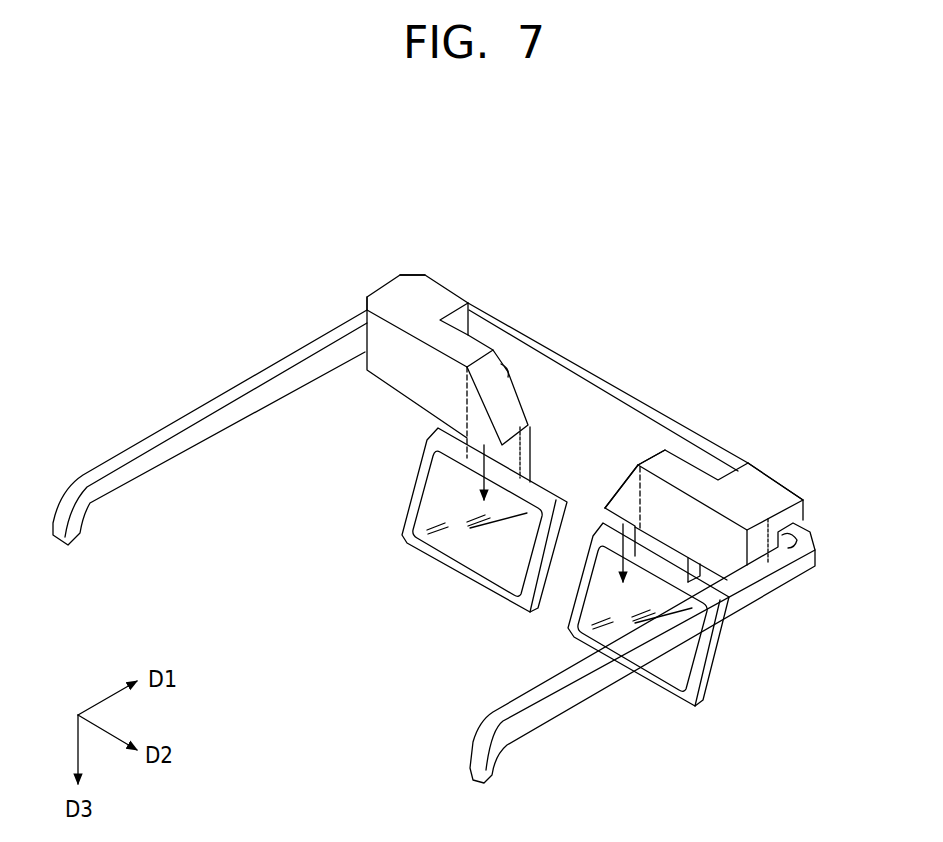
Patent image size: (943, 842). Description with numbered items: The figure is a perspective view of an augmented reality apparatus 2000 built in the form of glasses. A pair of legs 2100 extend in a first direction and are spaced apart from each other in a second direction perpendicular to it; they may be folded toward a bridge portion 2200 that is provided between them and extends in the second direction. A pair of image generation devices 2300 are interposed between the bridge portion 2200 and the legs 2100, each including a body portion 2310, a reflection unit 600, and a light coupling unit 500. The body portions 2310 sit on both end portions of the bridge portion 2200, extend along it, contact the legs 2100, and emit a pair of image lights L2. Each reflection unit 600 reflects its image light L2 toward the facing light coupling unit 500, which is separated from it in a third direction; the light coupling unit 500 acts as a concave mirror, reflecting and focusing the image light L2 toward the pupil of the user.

The augmented reality apparatus 2000 is at (790, 256).
The pair of legs 2100 is at (112, 480).
The bridge portion 2200 is at (587, 381).
The pair of image generation devices 2300 is at (377, 279).
The body portion 2310 is at (438, 293).
The reflection unit 600 is at (496, 368).
The light coupling unit 500 is at (408, 545).
The image light L2 is at (491, 462).